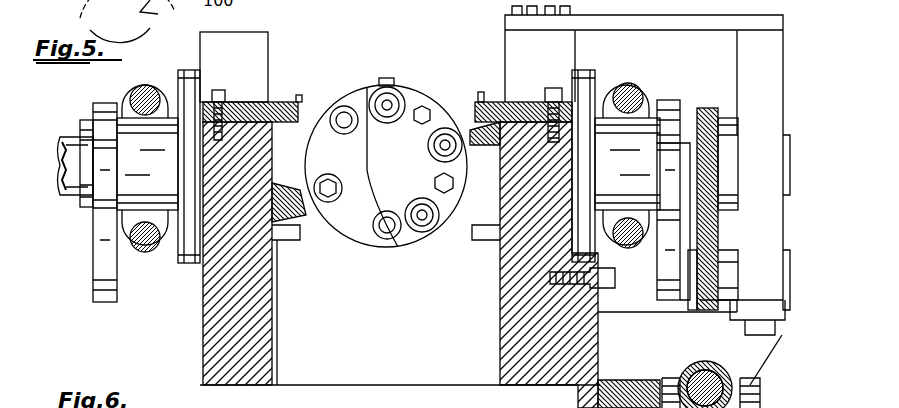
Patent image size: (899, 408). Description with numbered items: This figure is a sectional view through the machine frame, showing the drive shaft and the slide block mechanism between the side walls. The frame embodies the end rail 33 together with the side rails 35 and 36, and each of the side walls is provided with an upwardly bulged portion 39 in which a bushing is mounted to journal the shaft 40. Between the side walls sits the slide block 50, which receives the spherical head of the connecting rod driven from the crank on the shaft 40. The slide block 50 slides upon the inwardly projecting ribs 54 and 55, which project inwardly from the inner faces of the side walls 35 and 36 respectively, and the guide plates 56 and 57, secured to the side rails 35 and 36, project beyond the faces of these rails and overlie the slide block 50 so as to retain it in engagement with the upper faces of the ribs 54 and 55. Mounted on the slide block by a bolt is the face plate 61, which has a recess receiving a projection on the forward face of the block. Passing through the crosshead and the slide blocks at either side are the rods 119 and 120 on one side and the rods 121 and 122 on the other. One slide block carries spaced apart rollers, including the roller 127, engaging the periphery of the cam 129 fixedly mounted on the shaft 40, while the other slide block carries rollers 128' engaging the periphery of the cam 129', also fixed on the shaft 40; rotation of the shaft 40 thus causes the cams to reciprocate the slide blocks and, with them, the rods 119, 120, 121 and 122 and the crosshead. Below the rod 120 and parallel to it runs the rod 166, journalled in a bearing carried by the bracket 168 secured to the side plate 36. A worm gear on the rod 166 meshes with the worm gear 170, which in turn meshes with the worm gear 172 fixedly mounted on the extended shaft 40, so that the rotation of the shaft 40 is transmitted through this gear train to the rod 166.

The end rail 33 is at (394, 370).
The side rail 35 is at (265, 330).
The side rail 36 is at (520, 333).
The upwardly bulged portion 39 is at (268, 55).
The shaft 40 is at (62, 198).
The slide block 50 is at (310, 222).
The rib 54 is at (290, 245).
The rib 55 is at (476, 242).
The guide plate 56 is at (290, 102).
The guide plate 57 is at (480, 102).
The face plate 61 is at (362, 233).
The rod 119 is at (637, 82).
The rod 120 is at (637, 248).
The rod 121 is at (128, 92).
The rod 122 is at (145, 250).
The roller 127 is at (672, 100).
The roller 128' is at (57, 161).
The cam 129 is at (680, 242).
The cam 129' is at (77, 207).
The rod 166 is at (150, 16).
The bracket 168 is at (750, 358).
The worm gear 170 is at (715, 236).
The worm gear 172 is at (718, 160).